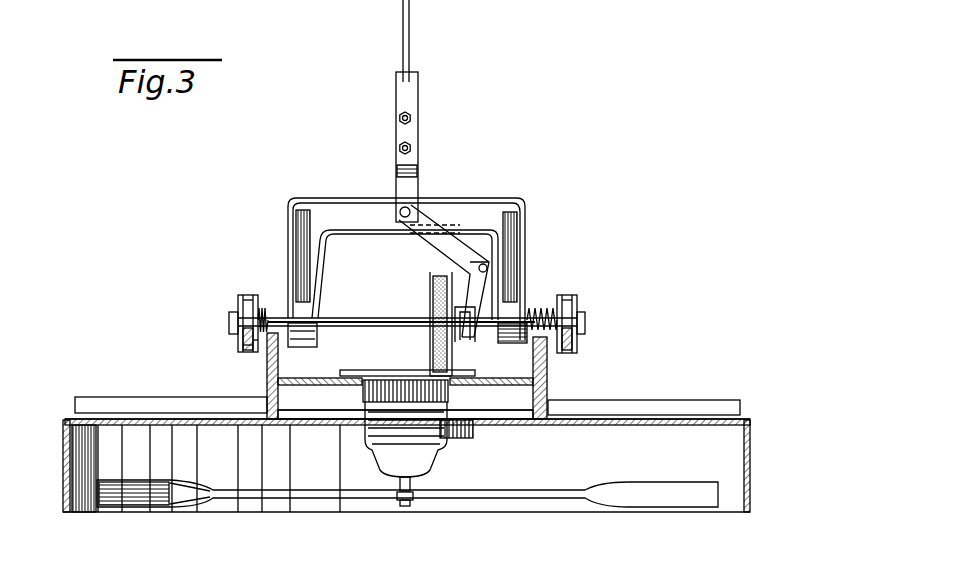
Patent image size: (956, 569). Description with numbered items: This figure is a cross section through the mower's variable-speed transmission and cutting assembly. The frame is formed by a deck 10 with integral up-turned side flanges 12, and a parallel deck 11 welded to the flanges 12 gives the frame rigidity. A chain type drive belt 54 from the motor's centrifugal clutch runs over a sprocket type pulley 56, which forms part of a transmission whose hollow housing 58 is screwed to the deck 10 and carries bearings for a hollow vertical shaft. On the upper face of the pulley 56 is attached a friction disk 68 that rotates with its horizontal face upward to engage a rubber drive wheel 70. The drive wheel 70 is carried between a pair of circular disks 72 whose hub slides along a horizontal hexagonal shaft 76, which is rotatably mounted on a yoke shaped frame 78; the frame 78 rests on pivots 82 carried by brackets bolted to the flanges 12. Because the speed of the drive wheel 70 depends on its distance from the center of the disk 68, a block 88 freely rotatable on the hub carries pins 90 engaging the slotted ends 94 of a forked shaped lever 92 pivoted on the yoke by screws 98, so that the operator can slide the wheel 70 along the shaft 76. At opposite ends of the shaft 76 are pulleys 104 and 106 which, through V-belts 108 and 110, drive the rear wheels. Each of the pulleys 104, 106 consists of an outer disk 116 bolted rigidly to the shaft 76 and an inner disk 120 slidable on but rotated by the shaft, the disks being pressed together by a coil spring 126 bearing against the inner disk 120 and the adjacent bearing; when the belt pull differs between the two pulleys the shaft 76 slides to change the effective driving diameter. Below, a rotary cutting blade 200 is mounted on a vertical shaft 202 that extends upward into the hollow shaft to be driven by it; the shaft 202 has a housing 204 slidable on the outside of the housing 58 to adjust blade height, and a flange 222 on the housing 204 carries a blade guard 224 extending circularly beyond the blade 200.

The deck 10 is at (550, 398).
The deck 11 is at (480, 335).
The side flanges 12 is at (548, 372).
The drive belt 54 is at (470, 425).
The pulley 56 is at (392, 392).
The hollow housing 58 is at (400, 412).
The friction disk 68 is at (385, 370).
The rubber drive wheel 70 is at (432, 296).
The circular disks 72 is at (437, 275).
The horizontal hexagonal shaft 76 is at (350, 318).
The yoke shaped frame 78 is at (288, 217).
The pivots 82 is at (243, 322).
The block 88 is at (432, 350).
The pins 90 is at (472, 312).
The forked shaped lever 92 is at (415, 128).
The slotted ends 94 is at (475, 340).
The screws 98 is at (412, 206).
The pulley 104 is at (228, 303).
The pulley 106 is at (588, 292).
The belt 108 is at (243, 298).
The belt 110 is at (568, 300).
The outer disk 116 is at (240, 345).
The inner disk 120 is at (258, 345).
The coil spring 126 is at (262, 305).
The rotary cutting blade 200 is at (322, 490).
The vertical shaft 202 is at (406, 508).
The housing 204 is at (440, 462).
The flange 222 is at (465, 422).
The blade guard 224 is at (65, 420).